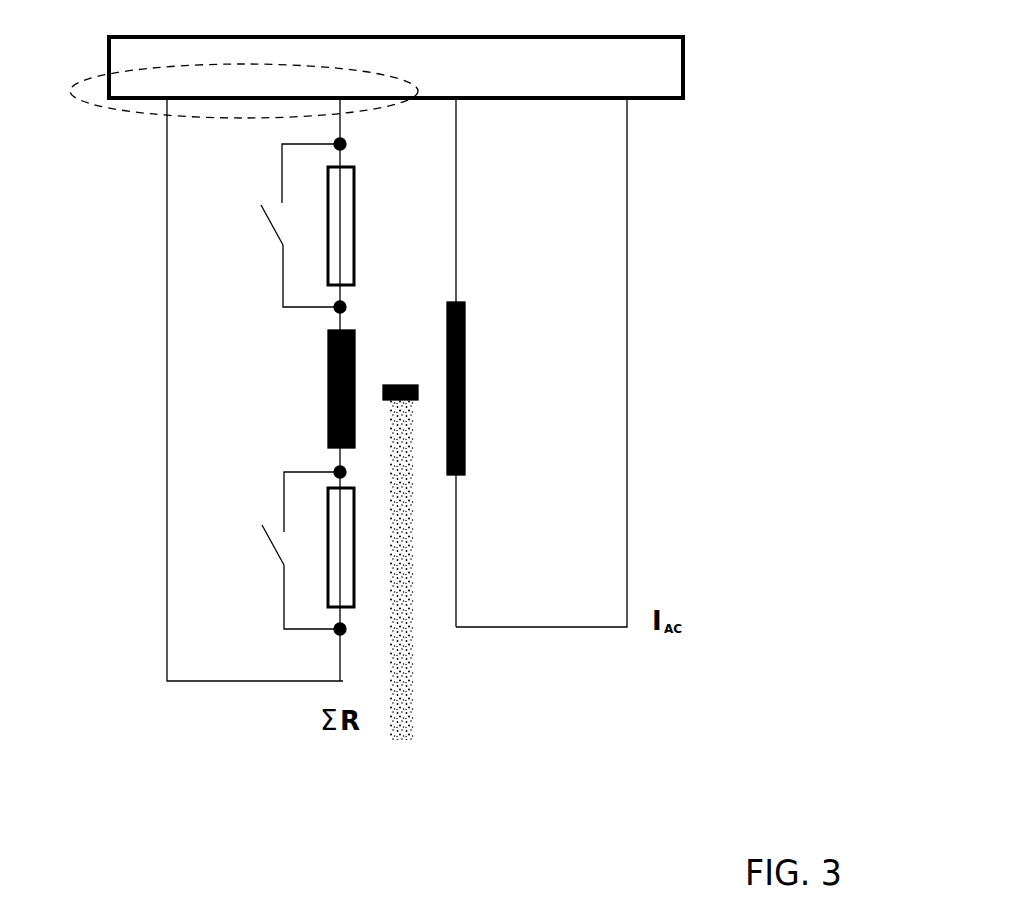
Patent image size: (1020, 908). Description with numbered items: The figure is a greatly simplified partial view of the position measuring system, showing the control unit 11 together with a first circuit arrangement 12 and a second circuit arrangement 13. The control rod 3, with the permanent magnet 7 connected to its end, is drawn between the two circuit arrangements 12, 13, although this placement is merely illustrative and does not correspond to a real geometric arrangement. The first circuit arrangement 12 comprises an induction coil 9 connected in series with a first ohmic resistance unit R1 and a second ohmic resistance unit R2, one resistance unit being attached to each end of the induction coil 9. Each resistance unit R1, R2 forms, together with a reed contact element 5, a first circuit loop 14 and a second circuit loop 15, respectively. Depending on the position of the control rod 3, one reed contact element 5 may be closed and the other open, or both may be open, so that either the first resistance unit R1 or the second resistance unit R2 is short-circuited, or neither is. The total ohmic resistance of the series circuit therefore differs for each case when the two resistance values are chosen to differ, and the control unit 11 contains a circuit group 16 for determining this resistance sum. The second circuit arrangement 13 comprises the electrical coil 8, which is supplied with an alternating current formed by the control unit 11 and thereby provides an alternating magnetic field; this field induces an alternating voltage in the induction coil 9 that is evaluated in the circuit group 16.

The control rod 3 is at (420, 693).
The reed contact element 5 is at (251, 235).
The permanent magnet 7 is at (394, 362).
The electrical coil 8 is at (481, 388).
The induction coil 9 is at (305, 383).
The control unit 11 is at (703, 62).
The first circuit arrangement 12 is at (160, 447).
The second circuit arrangement 13 is at (640, 430).
The first circuit loop 14 is at (272, 483).
The second circuit loop 15 is at (278, 294).
The circuit group 16 is at (122, 118).
The first ohmic resistance unit R1 is at (370, 546).
The second ohmic resistance unit R2 is at (370, 228).